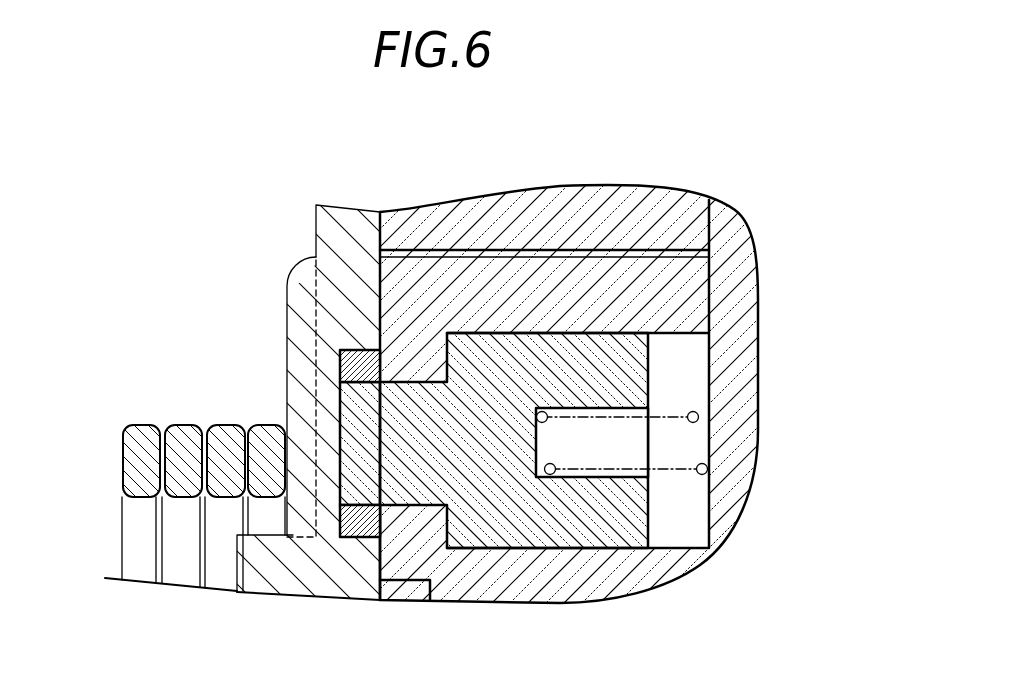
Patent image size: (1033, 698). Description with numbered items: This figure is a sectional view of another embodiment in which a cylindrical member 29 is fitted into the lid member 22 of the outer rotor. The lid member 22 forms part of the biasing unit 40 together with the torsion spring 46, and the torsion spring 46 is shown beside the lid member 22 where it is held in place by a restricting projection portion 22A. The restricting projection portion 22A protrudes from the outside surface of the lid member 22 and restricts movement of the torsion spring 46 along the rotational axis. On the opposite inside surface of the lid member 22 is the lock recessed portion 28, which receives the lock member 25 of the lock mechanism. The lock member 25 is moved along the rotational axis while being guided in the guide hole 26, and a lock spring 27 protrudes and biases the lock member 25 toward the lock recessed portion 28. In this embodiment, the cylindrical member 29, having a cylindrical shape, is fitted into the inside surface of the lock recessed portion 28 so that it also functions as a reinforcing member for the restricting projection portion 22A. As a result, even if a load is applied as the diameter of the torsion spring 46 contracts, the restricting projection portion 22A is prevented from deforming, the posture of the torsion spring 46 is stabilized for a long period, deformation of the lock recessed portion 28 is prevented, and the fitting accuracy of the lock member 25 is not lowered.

The lid member 22 is at (323, 227).
The biasing unit 40 is at (376, 378).
The restricting projection portion 22A is at (303, 273).
The lock member 25 is at (652, 375).
The guide hole 26 is at (400, 386).
The lock spring 27 is at (702, 469).
The lock recessed portion 28 is at (342, 452).
The cylindrical member 29 is at (350, 540).
The torsion spring 46 is at (122, 510).